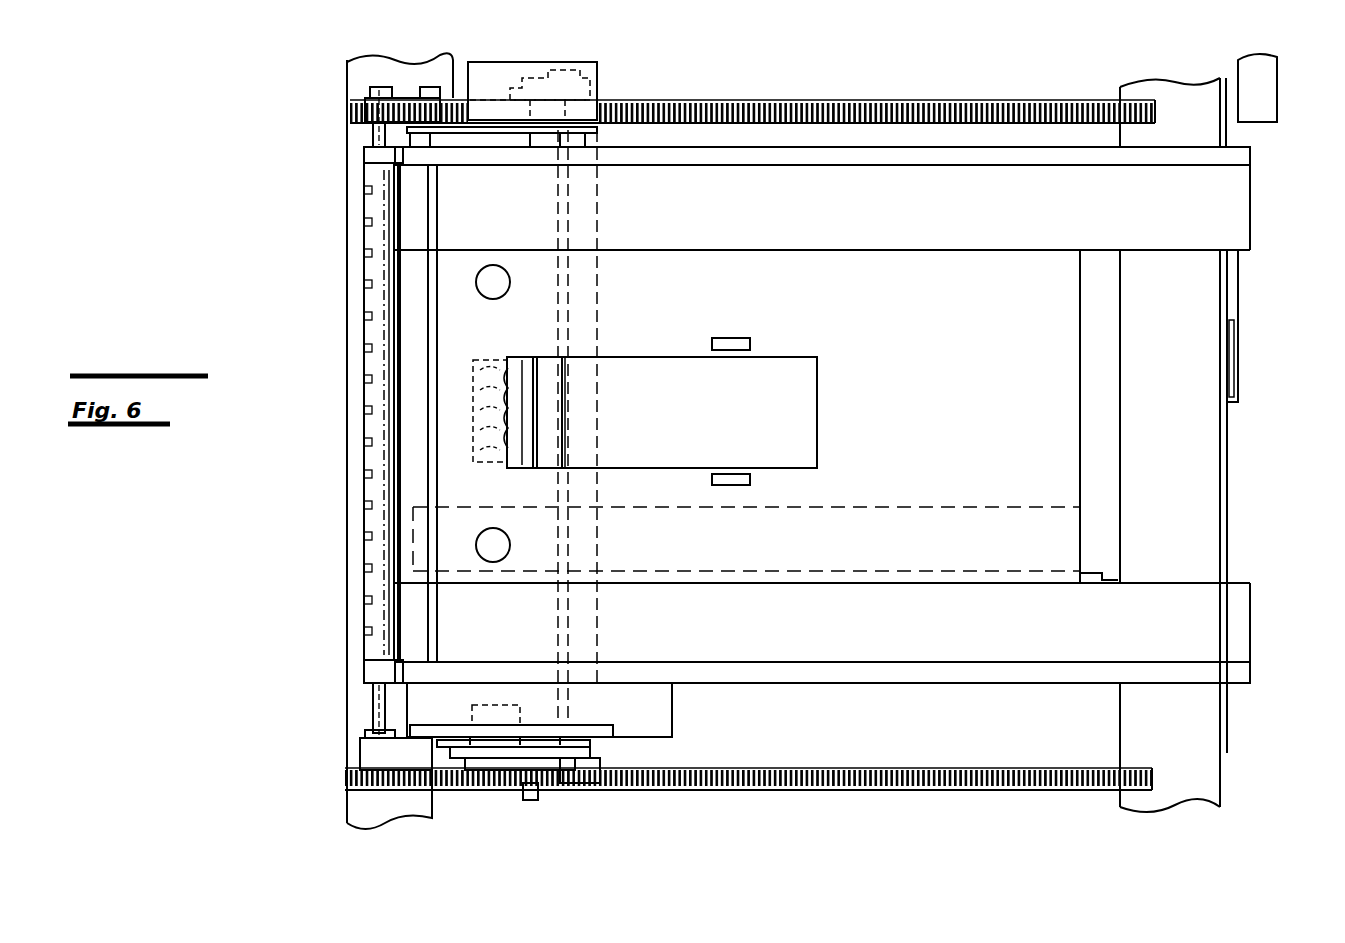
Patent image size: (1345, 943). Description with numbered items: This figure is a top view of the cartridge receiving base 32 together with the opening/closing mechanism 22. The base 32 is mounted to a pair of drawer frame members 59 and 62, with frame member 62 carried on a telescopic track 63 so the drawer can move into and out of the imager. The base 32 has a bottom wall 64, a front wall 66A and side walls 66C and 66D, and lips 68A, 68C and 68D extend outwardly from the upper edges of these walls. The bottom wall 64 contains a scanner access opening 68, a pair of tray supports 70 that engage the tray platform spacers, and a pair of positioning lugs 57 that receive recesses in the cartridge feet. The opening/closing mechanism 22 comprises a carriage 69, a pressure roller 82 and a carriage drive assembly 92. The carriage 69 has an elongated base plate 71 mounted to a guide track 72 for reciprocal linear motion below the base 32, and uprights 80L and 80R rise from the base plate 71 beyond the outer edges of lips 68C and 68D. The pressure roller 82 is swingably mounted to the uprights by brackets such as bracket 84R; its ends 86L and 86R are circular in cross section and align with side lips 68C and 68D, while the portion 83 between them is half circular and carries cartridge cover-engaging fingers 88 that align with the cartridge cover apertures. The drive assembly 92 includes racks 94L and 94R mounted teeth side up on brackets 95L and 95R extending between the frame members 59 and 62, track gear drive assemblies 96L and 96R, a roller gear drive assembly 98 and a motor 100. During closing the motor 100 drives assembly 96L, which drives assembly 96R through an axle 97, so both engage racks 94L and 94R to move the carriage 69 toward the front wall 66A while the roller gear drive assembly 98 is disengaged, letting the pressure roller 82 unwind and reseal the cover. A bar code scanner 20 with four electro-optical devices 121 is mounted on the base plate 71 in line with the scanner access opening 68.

The bar code scanner 20 is at (524, 360).
The opening/closing mechanism 22 is at (338, 716).
The base 32 is at (1230, 198).
The positioning lugs 57 is at (495, 297).
The frame member 59 is at (408, 815).
The frame member 62 is at (1210, 778).
The telescopic track 63 is at (1240, 387).
The bottom wall 64 is at (1052, 370).
The front wall 66A is at (435, 262).
The side wall 66C is at (840, 666).
The side wall 66D is at (912, 168).
The scanner access opening 68 is at (815, 390).
The lip 68A is at (420, 226).
The lip 68C is at (730, 677).
The lip 68D is at (822, 157).
The carriage 69 is at (612, 432).
The tray supports 70 is at (725, 338).
The base plate 71 is at (585, 397).
The guide track 72 is at (1096, 590).
The upright 80L is at (610, 737).
The upright 80R is at (600, 128).
The pressure roller 82 is at (375, 592).
The portion of pressure roller 83 is at (372, 335).
The bracket 84R is at (405, 96).
The end of pressure roller 86L is at (366, 674).
The end of pressure roller 86R is at (362, 158).
The cartridge cover-engaging fingers 88 is at (366, 287).
The carriage drive assembly 92 is at (498, 775).
The rack 94L is at (1032, 770).
The rack 94R is at (950, 108).
The bracket 95L is at (1062, 792).
The bracket 95R is at (880, 80).
The track gear drive assembly 96L is at (585, 778).
The track gear drive assembly 96R is at (585, 62).
The axle 97 is at (570, 375).
The roller gear drive assembly 98 is at (456, 772).
The motor 100 is at (539, 710).
The electro-optical devices 121 is at (535, 448).